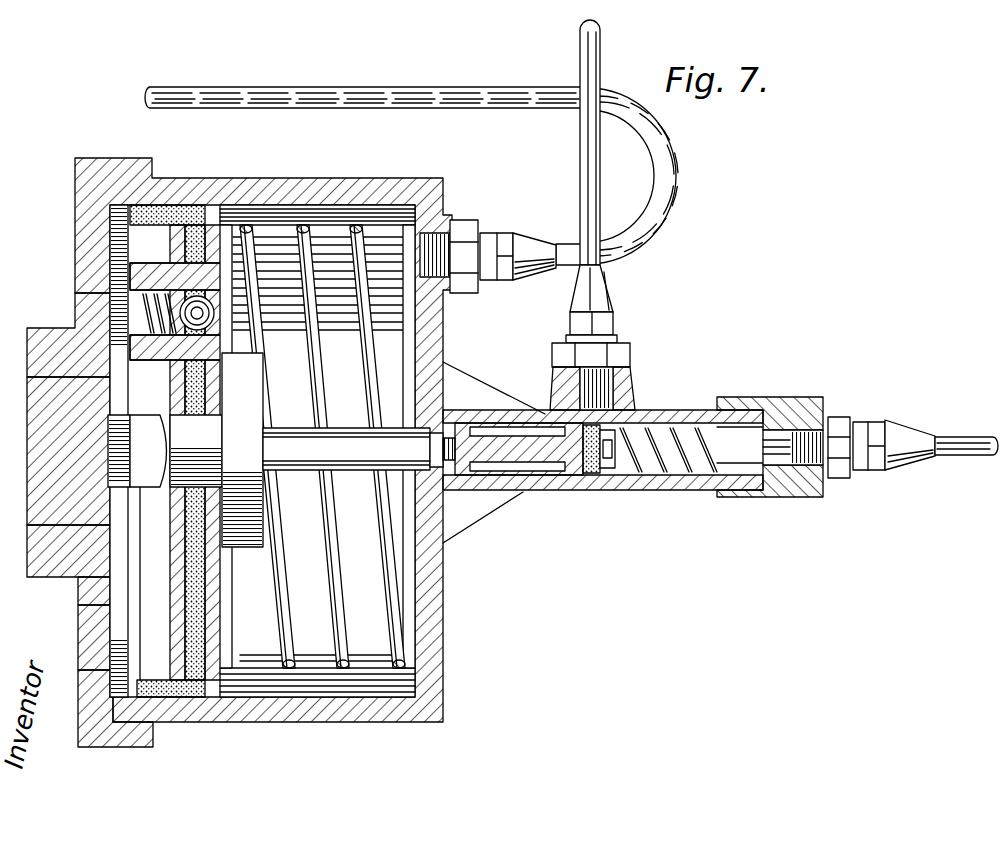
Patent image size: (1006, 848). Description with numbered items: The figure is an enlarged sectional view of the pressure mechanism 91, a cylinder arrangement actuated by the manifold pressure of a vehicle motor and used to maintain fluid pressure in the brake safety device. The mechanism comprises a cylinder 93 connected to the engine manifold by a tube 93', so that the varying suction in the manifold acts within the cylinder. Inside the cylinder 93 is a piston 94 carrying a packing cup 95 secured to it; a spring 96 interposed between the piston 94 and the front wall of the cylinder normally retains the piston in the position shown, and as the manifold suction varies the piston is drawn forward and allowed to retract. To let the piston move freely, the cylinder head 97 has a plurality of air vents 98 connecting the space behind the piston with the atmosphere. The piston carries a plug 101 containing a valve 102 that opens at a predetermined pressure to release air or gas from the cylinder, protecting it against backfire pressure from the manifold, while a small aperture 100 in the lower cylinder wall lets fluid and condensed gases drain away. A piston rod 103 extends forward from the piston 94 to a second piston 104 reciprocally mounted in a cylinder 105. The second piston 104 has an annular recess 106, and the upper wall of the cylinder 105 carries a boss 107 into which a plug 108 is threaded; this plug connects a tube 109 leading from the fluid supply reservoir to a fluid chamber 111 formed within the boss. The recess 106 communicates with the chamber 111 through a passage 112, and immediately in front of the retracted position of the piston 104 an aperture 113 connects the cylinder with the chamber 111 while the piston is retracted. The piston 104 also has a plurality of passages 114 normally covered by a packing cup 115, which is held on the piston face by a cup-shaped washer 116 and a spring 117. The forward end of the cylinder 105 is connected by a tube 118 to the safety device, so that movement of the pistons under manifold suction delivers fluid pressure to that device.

The pressure mechanism 91 is at (424, 180).
The cylinder 93 is at (360, 420).
The tube 93' is at (366, 77).
The piston 94 is at (218, 210).
The packing cup 95 is at (186, 207).
The spring 96 is at (388, 602).
The cylinder head 97 is at (50, 333).
The air vents 98 is at (76, 665).
The aperture 100 is at (205, 722).
The plug 101 is at (107, 272).
The valve 102 is at (227, 352).
The piston rod 103 is at (445, 394).
The second piston 104 is at (573, 480).
The cylinder 105 is at (700, 412).
The annular recess 106 is at (499, 422).
The boss 107 is at (632, 395).
The plug 108 is at (625, 342).
The tube 109 is at (411, 142).
The fluid chamber 111 is at (553, 373).
The passage 112 is at (557, 408).
The aperture 113 is at (640, 410).
The passages 114 is at (547, 478).
The packing cup 115 is at (612, 478).
The cup-shaped washer 116 is at (645, 470).
The spring 117 is at (698, 462).
The tube 118 is at (955, 440).